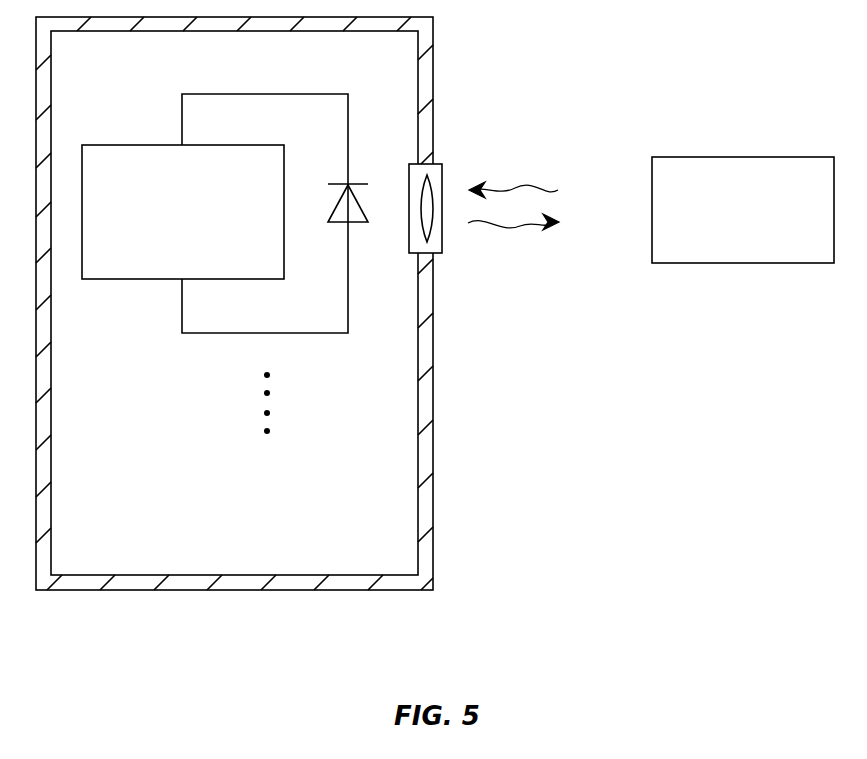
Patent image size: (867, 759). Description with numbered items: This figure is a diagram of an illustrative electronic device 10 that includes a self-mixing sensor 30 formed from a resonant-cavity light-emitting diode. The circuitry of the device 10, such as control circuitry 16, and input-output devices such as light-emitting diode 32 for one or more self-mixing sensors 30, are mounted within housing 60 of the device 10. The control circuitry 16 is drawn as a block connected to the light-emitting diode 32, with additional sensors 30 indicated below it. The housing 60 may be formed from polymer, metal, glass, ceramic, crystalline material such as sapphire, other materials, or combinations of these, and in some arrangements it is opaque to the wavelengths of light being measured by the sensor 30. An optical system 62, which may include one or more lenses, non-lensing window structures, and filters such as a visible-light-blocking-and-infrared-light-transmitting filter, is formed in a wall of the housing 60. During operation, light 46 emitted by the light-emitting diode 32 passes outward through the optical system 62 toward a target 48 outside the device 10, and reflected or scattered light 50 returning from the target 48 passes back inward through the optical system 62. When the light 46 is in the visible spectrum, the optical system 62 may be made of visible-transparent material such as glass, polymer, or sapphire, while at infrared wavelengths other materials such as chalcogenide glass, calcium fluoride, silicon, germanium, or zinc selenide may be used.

The electronic device 10 is at (268, 362).
The control circuitry 16 is at (130, 280).
The self-mixing sensor 30 is at (284, 264).
The light-emitting diode 32 is at (370, 208).
The light 46 is at (517, 230).
The target 48 is at (742, 156).
The reflected or scattered light 50 is at (517, 184).
The housing 60 is at (435, 41).
The optical system 62 is at (443, 173).